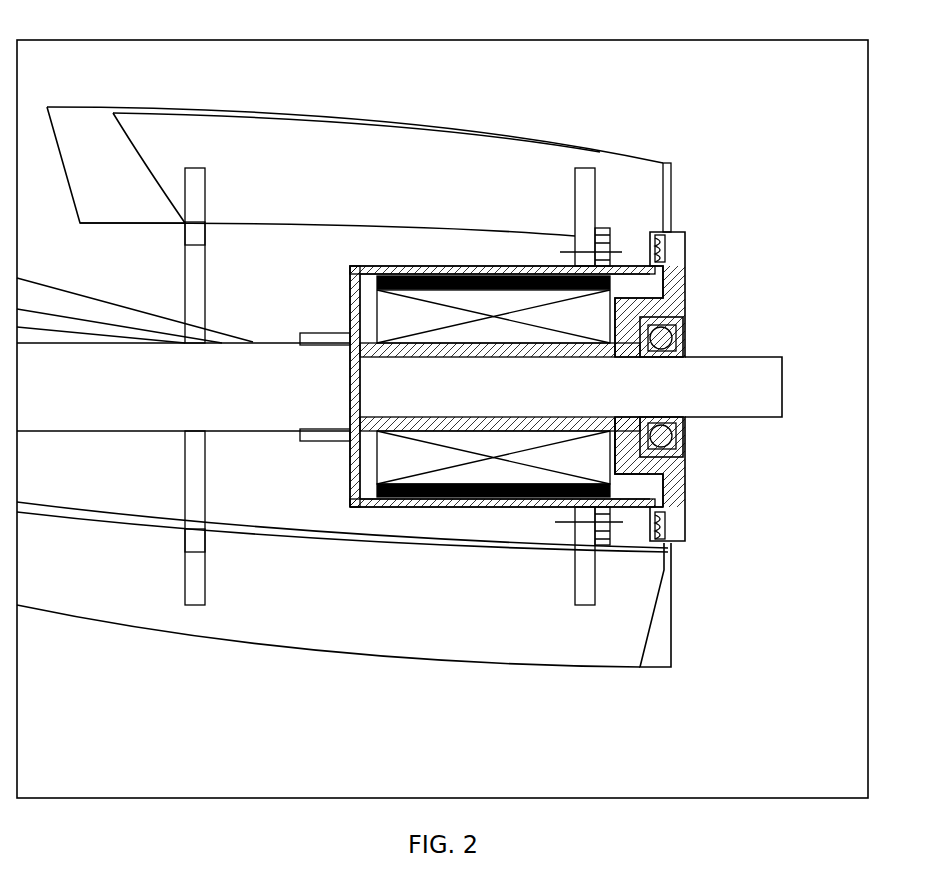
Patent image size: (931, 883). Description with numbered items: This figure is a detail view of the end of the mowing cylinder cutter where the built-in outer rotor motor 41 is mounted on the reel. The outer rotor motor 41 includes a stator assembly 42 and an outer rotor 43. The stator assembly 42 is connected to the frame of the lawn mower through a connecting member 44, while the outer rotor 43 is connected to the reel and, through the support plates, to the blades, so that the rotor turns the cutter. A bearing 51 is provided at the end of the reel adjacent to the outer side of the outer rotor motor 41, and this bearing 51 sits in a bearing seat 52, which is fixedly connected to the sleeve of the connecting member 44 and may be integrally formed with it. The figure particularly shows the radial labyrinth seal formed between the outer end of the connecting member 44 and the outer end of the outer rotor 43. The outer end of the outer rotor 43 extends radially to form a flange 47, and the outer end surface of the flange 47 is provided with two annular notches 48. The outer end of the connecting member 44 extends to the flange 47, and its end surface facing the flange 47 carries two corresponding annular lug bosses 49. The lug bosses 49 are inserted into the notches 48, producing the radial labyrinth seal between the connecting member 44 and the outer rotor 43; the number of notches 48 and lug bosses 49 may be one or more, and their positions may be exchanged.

The outer rotor motor 41 is at (527, 473).
The stator assembly 42 is at (418, 458).
The outer rotor 43 is at (540, 272).
The connecting member 44 is at (683, 223).
The flange 47 is at (653, 232).
The annular notch 48 is at (688, 247).
The annular lug boss 49 is at (667, 260).
The bearing 51 is at (688, 433).
The bearing seat 52 is at (680, 463).